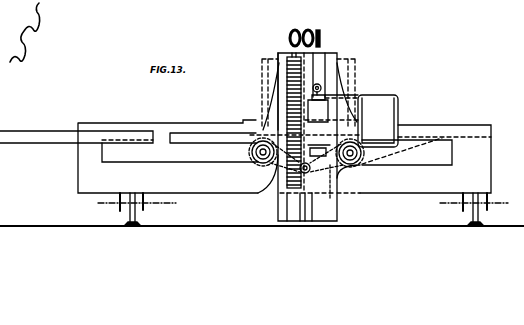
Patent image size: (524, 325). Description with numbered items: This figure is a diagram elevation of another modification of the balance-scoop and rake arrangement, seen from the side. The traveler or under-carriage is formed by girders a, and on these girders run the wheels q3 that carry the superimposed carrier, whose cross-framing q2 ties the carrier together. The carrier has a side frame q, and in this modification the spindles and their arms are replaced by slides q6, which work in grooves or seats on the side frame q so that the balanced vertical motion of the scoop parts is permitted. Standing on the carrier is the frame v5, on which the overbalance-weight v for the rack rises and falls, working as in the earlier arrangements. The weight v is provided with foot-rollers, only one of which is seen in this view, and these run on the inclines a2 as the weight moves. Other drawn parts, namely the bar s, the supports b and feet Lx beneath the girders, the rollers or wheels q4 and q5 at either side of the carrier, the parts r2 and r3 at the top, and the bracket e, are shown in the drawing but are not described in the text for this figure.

The girders a is at (284, 156).
The bar s is at (128, 136).
The inclines a2 is at (407, 151).
The supporting legs b is at (303, 208).
The feet Lx is at (311, 218).
The side frame q is at (305, 137).
The cross-framing q2 is at (315, 181).
The wheels q3 is at (378, 121).
The left wheel q4 is at (271, 155).
The right wheel q5 is at (342, 155).
The slides q6 is at (355, 95).
The overbalance-weight v is at (284, 120).
The frame v5 is at (306, 93).
The roller r2 is at (318, 79).
The pulleys r3 is at (320, 36).
The bracket e is at (319, 151).